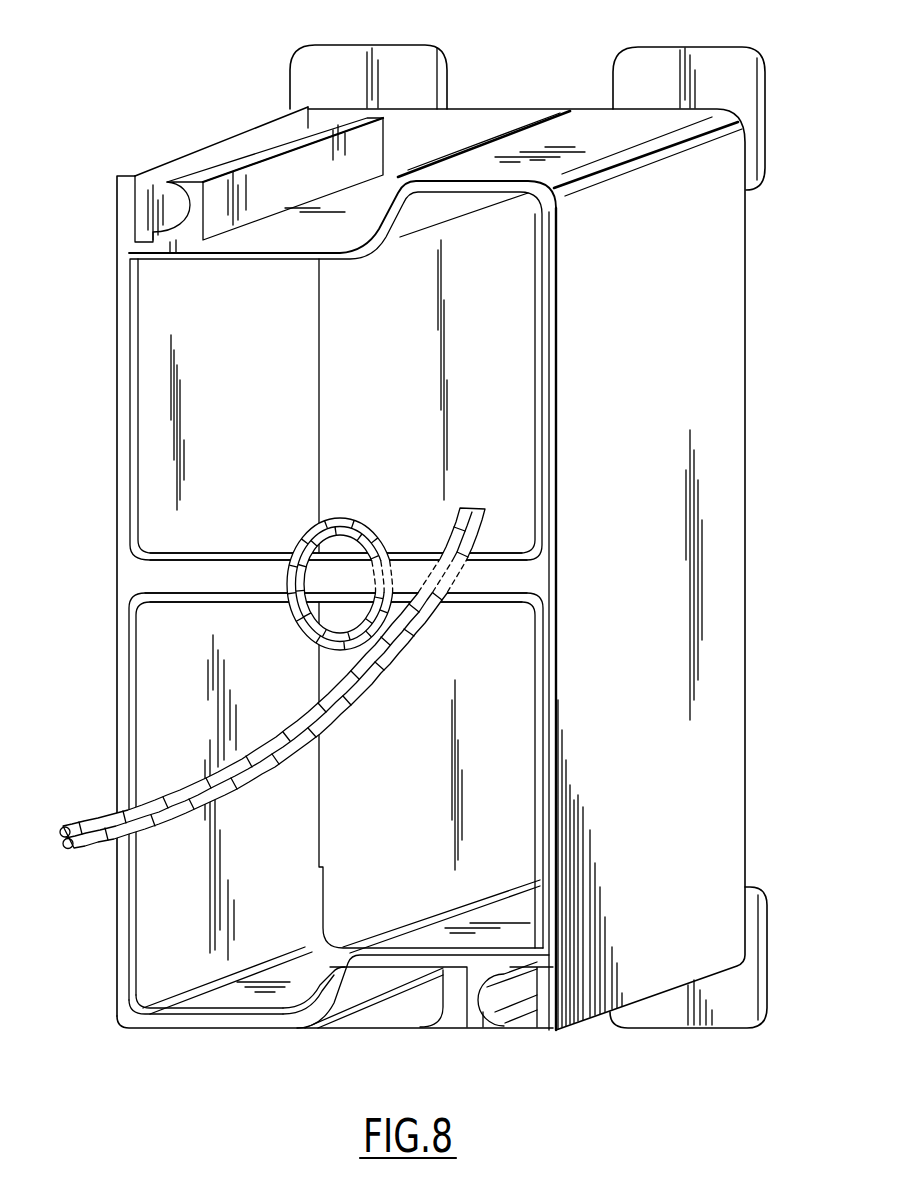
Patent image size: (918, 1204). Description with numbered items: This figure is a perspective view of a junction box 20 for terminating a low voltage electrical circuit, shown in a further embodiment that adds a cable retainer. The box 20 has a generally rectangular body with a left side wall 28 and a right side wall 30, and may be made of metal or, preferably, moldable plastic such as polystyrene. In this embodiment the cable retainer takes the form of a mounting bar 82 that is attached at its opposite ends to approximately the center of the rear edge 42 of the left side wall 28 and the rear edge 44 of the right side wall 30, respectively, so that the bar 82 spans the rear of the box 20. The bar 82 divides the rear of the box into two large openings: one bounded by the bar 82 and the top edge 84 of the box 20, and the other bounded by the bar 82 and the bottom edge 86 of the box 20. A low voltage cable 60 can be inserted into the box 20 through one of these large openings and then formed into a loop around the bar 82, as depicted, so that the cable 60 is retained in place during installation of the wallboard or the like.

The junction box 20 is at (138, 152).
The left side wall 28 is at (217, 438).
The right side wall 30 is at (633, 395).
The rear edge of left side wall 42 is at (124, 518).
The rear edge of right side wall 44 is at (551, 482).
The low voltage cable 60 is at (88, 822).
The mounting bar 82 is at (410, 557).
The top edge 84 is at (277, 253).
The bottom edge 86 is at (240, 997).